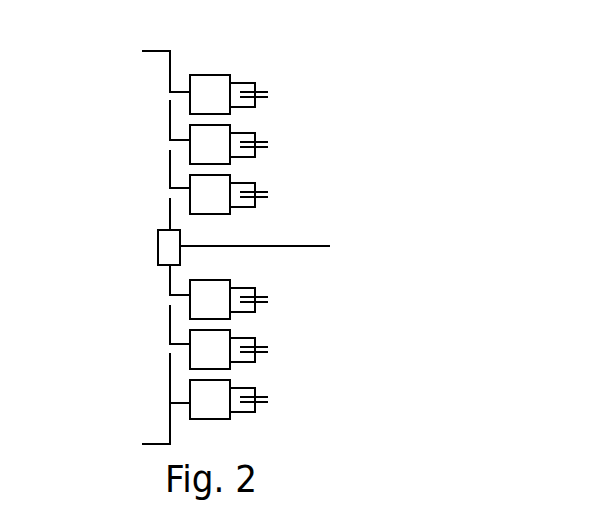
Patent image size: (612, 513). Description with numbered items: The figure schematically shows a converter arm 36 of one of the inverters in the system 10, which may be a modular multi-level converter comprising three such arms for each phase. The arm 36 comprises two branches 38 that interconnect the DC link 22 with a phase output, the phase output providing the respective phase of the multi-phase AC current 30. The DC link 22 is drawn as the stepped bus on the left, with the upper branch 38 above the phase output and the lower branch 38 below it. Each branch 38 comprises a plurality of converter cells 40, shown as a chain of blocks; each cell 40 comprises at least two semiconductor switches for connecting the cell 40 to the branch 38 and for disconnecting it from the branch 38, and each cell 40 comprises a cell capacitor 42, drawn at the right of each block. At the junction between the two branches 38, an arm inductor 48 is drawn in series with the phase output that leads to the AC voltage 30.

The system 10 is at (489, 501).
The DC link 22 is at (93, 192).
The first three-phase AC voltage 30 is at (313, 228).
The converter arm 36 is at (403, 129).
The branch 38 is at (276, 212).
The converter cell 40 is at (211, 75).
The cell capacitor 42 is at (273, 74).
The arm inductor 48 is at (158, 246).